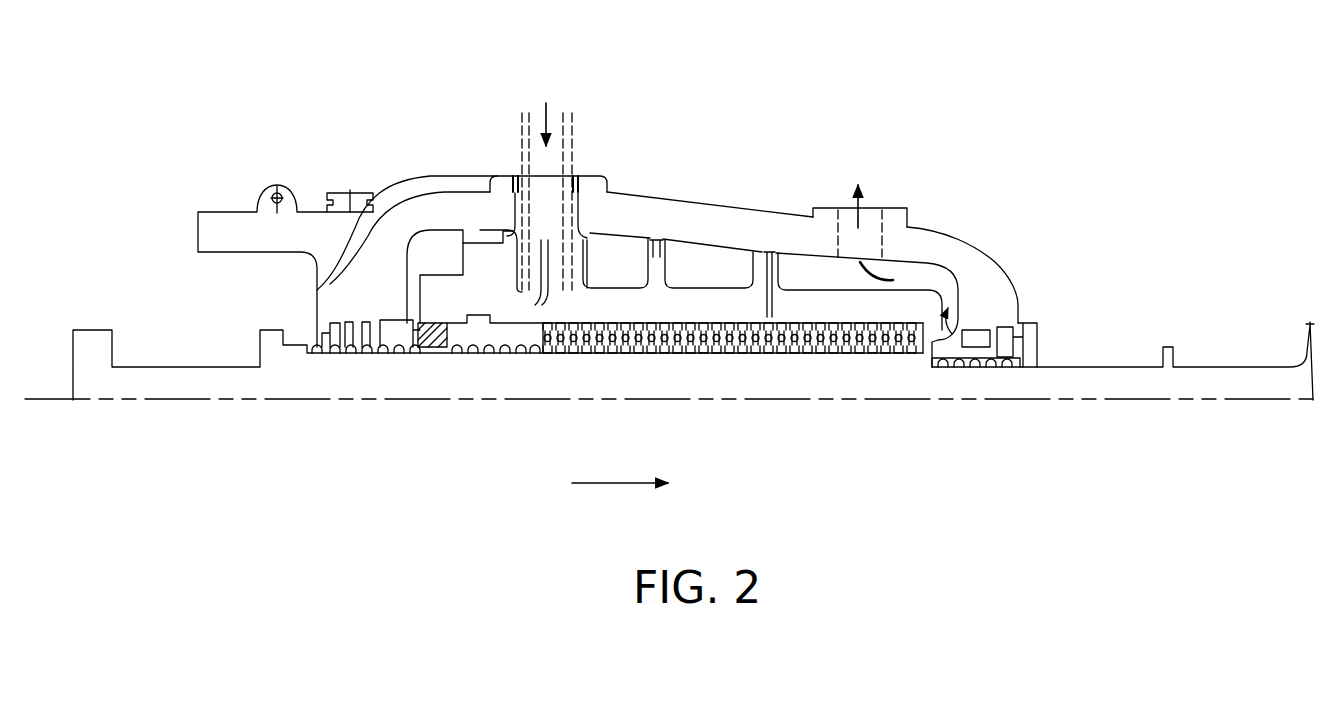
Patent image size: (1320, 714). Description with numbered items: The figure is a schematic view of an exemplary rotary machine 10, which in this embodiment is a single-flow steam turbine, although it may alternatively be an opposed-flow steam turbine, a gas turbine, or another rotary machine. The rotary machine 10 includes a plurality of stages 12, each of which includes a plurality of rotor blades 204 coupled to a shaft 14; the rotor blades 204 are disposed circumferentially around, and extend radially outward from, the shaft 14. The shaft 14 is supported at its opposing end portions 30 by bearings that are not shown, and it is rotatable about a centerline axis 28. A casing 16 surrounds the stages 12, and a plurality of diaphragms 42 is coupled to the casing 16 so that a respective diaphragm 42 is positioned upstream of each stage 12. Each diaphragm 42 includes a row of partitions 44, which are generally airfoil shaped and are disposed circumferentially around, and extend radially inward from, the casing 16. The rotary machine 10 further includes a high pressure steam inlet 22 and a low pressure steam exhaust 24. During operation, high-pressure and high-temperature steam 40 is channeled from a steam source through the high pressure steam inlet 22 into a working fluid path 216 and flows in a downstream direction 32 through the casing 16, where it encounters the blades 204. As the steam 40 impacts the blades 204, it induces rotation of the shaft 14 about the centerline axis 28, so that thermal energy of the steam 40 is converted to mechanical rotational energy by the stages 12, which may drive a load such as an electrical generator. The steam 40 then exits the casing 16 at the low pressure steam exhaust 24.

The rotary machine 10 is at (890, 60).
The stage 12 is at (652, 357).
The shaft 14 is at (1212, 365).
The casing 16 is at (993, 243).
The high pressure steam inlet 22 is at (582, 133).
The low pressure steam exhaust 24 is at (882, 203).
The centerline axis 28 is at (1253, 403).
The end portion 30 is at (140, 365).
The downstream direction 32 is at (618, 485).
The steam 40 is at (558, 100).
The diaphragm 42 is at (624, 312).
The partition 44 is at (671, 309).
The rotor blade 204 is at (697, 357).
The working fluid path 216 is at (530, 357).